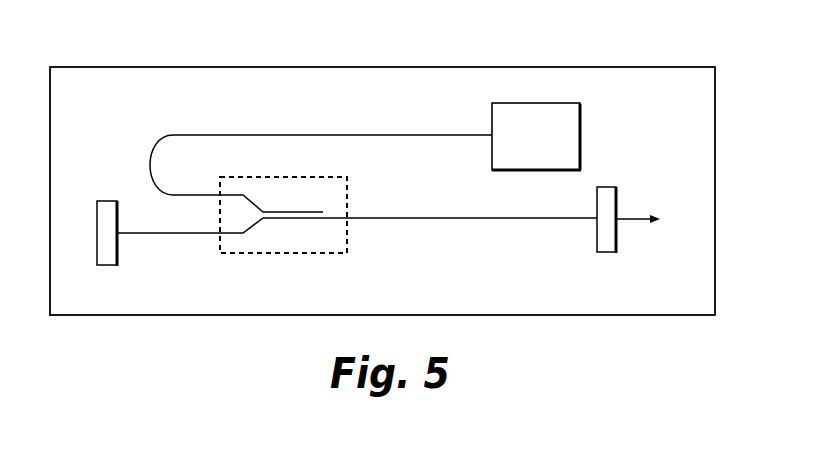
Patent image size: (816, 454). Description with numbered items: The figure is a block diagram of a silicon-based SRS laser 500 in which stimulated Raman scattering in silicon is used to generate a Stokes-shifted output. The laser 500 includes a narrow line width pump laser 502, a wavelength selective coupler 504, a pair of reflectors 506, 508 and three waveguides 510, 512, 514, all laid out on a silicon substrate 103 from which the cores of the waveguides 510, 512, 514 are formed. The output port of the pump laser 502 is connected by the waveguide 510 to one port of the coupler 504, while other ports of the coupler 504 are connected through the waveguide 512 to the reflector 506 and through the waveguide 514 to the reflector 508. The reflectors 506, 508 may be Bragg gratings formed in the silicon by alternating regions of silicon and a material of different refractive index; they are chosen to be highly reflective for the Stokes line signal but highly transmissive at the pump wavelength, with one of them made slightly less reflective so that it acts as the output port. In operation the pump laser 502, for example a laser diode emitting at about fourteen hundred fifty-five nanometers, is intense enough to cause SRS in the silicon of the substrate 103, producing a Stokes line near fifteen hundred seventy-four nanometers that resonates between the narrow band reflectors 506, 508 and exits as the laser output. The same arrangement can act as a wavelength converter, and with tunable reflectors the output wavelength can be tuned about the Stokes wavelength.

The silicon-based SRS laser 500 is at (600, 48).
The silicon substrate 103 is at (494, 309).
The pump laser 502 is at (580, 117).
The wavelength selective coupler 504 is at (330, 253).
The reflector 506 is at (117, 245).
The reflector 508 is at (616, 235).
The waveguide 510 is at (350, 135).
The waveguide 512 is at (197, 235).
The waveguide 514 is at (447, 219).